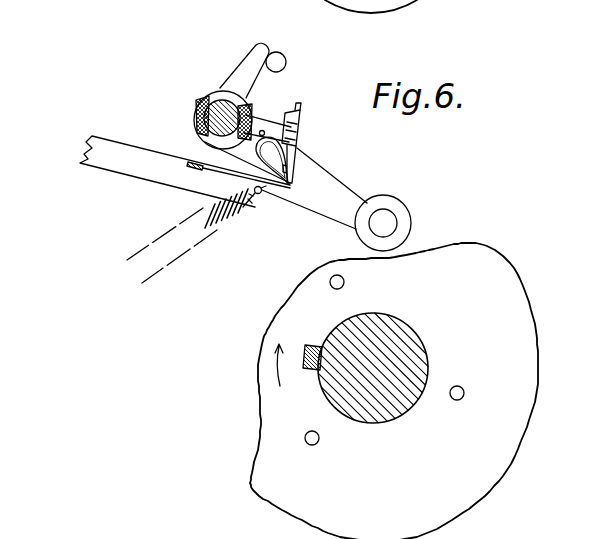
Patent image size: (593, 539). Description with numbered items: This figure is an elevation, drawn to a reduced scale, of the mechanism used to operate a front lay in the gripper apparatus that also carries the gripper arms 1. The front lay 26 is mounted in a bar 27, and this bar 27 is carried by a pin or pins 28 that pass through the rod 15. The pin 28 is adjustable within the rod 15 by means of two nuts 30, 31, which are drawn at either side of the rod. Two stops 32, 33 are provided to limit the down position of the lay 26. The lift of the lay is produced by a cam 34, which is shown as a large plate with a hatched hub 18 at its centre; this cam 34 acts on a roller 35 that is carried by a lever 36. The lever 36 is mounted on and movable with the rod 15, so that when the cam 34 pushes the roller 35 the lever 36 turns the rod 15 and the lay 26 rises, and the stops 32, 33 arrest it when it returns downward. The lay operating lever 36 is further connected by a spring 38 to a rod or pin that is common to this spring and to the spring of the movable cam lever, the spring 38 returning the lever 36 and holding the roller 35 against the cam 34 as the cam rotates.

The gripper arm 1 is at (198, 163).
The rod 15 is at (218, 100).
The cam disc 18 is at (375, 345).
The front lay 26 is at (256, 166).
The bar 27 is at (300, 131).
The pin 28 is at (262, 133).
The nut 30 is at (202, 100).
The nut 31 is at (240, 111).
The stop 32 is at (243, 77).
The stop 33 is at (275, 58).
The cam 34 is at (394, 391).
The roller 35 is at (403, 218).
The lever 36 is at (325, 198).
The spring 38 is at (222, 230).